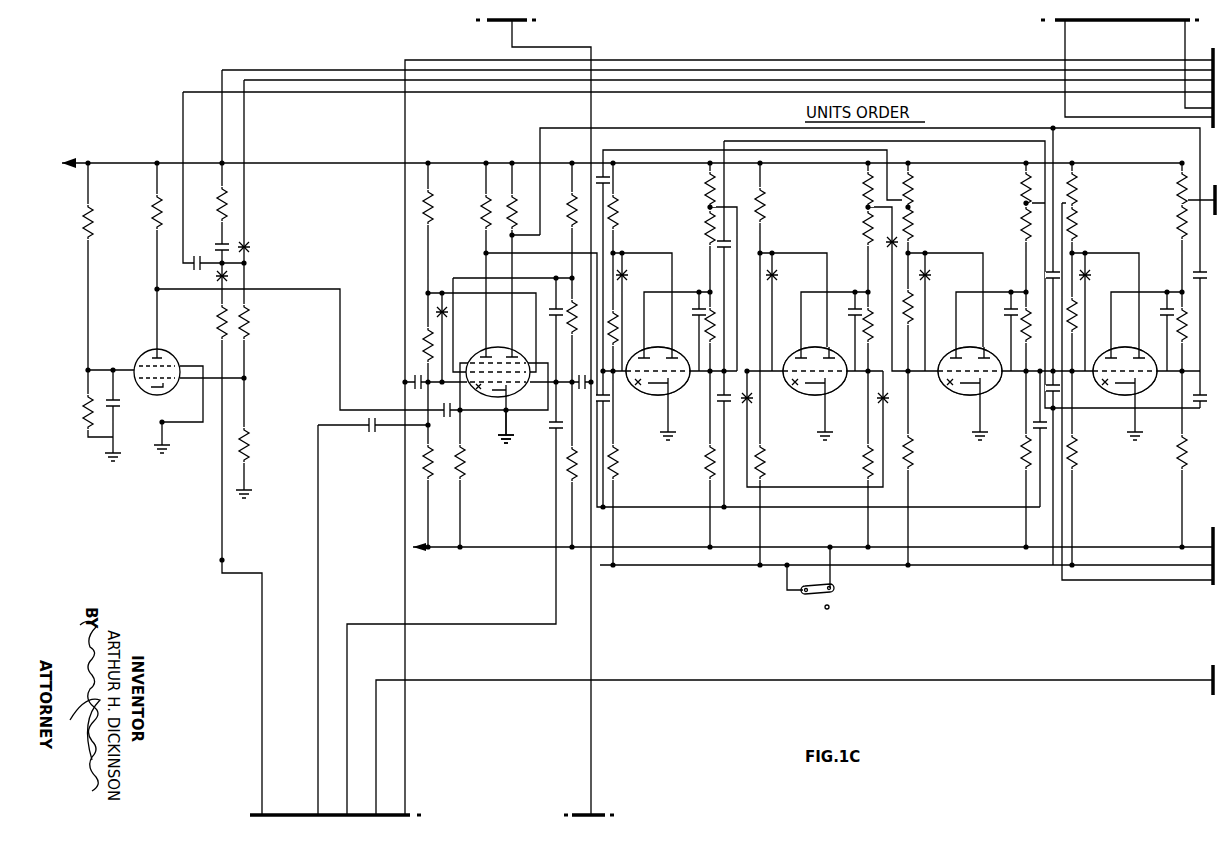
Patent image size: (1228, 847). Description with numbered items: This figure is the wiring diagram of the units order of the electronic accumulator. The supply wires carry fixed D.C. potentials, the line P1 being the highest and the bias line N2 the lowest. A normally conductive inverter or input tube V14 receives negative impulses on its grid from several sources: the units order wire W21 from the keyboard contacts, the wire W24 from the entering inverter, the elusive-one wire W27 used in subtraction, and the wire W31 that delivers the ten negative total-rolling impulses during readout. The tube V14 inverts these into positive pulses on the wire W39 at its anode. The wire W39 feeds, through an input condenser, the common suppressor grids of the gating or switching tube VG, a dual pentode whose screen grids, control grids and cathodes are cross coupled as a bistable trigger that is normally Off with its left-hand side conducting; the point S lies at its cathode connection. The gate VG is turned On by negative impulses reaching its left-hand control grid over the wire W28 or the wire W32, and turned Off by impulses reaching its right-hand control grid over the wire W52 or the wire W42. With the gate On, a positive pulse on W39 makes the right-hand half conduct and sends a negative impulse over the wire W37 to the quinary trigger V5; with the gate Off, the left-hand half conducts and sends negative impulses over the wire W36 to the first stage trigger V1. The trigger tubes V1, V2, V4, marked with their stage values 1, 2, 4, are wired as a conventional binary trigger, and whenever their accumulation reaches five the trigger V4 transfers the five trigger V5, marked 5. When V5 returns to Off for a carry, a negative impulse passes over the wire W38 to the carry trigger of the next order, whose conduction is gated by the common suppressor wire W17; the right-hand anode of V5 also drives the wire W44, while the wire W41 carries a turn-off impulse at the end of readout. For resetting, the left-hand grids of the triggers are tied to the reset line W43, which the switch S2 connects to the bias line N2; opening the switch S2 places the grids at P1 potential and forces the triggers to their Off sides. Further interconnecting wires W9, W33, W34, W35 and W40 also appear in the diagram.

The P1 potential wire P1 is at (620, 154).
The N2 bias line N2 is at (813, 556).
The wire W9 is at (1185, 30).
The carry gating wire W17 is at (1065, 38).
The units order wire W21 is at (877, 92).
The negative pulse wire W24 is at (815, 80).
The elusive one wire W27 is at (735, 70).
The gate turn-on wire W28 is at (672, 60).
The total rolling impulse wire W31 is at (224, 560).
The gate-on wire W32 is at (318, 494).
The wire W33 is at (724, 141).
The wire W34 is at (840, 150).
The wire W35 is at (842, 488).
The first stage input wire W36 is at (490, 253).
The five trigger input wire W37 is at (652, 128).
The carry impulse wire W38 is at (1182, 200).
The positive pulse wire W39 is at (292, 289).
The wire W40 is at (628, 567).
The trigger turn-off wire W41 is at (885, 680).
The gate turn-off wire W42 is at (512, 624).
The reset line W43 is at (930, 567).
The five trigger output wire W44 is at (1105, 580).
The right-hand gate grid wire W52 is at (590, 47).
The inverter tube V14 is at (170, 352).
The gating tube VG is at (481, 352).
The cathode ground connection S is at (511, 426).
The first trigger stage 1 is at (658, 359).
The second trigger stage 2 is at (815, 359).
The four trigger stage 4 is at (970, 359).
The five trigger stage 5 is at (1125, 359).
The first stage trigger V1 is at (660, 395).
The second stage trigger V2 is at (818, 395).
The four trigger V4 is at (966, 395).
The five trigger V5 is at (1140, 392).
The reset switch S2 is at (805, 598).